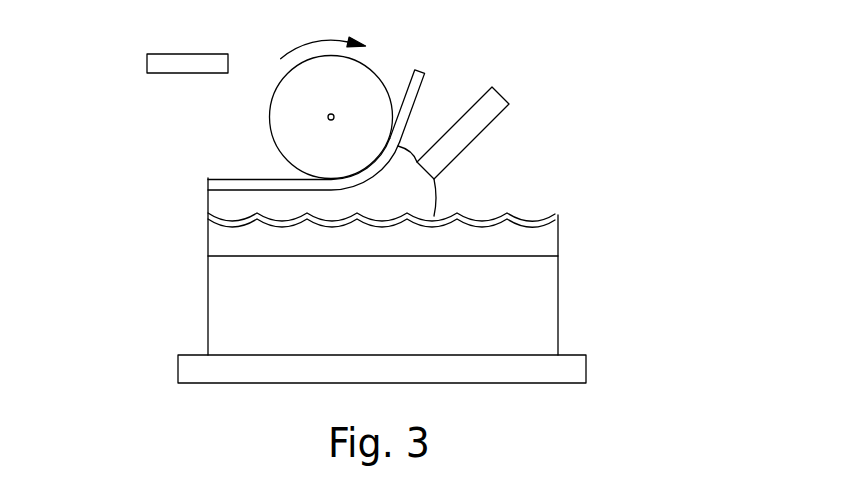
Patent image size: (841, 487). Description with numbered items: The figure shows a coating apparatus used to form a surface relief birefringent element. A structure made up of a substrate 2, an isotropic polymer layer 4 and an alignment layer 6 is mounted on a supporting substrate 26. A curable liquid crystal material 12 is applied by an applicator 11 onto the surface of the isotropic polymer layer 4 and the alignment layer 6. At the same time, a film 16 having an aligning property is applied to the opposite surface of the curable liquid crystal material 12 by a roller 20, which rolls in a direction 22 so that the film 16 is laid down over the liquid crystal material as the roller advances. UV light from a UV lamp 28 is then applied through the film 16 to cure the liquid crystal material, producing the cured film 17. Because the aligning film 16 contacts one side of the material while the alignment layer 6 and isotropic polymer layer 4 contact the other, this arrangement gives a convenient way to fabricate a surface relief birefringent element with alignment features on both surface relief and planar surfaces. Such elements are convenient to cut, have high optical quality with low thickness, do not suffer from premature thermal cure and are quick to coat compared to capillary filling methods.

The substrate 2 is at (560, 303).
The isotropic polymer layer 4 is at (548, 242).
The alignment layer 6 is at (538, 222).
The applicator 11 is at (493, 102).
The curable liquid crystal material 12 is at (428, 203).
The film 16 is at (417, 68).
The cured film 17 is at (213, 204).
The roller 20 is at (270, 113).
The direction 22 is at (322, 38).
The substrate 26 is at (586, 367).
The UV lamp 28 is at (147, 62).